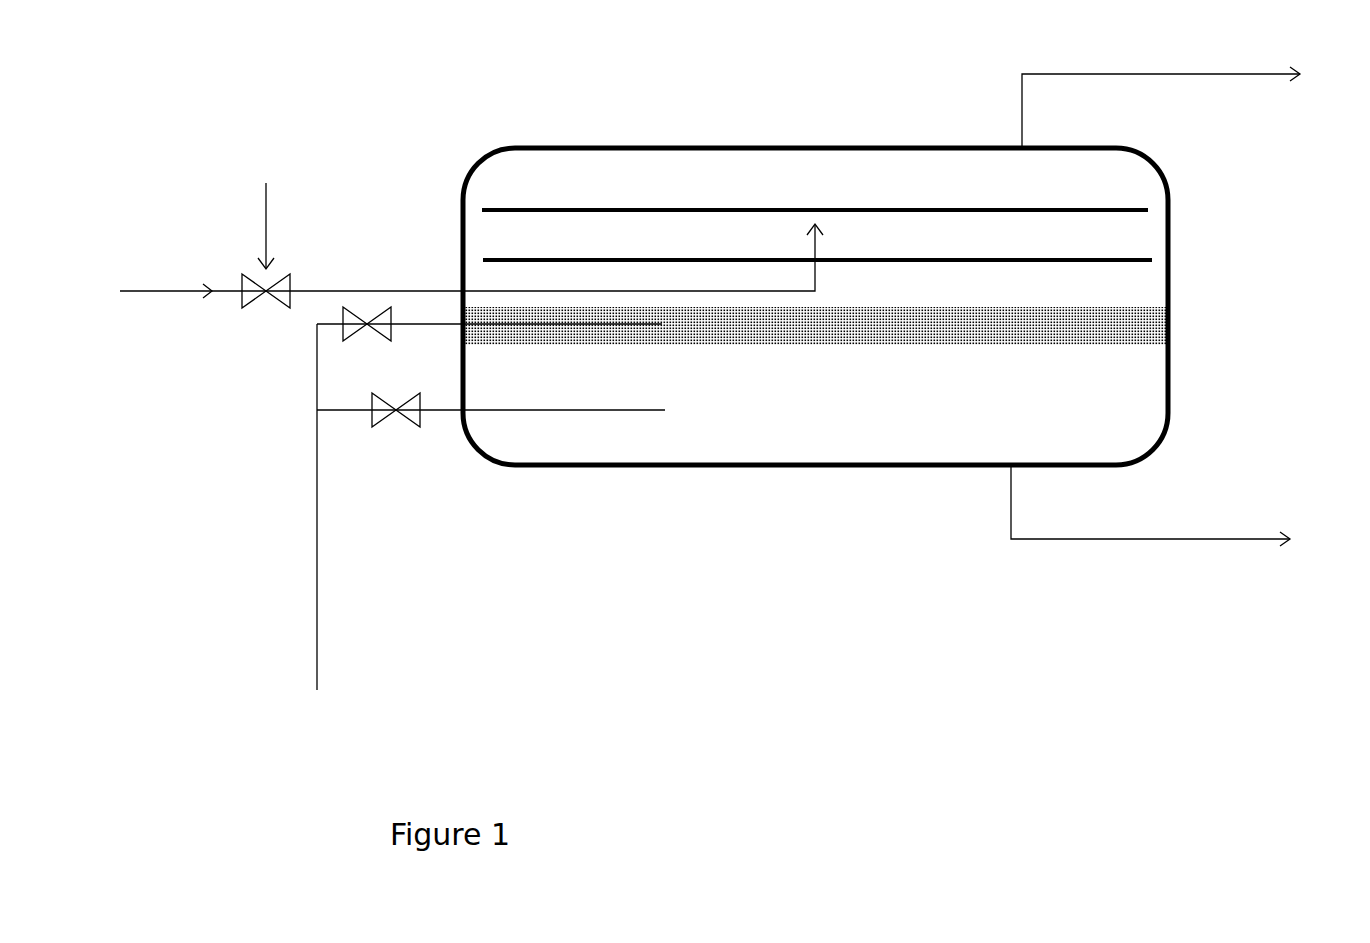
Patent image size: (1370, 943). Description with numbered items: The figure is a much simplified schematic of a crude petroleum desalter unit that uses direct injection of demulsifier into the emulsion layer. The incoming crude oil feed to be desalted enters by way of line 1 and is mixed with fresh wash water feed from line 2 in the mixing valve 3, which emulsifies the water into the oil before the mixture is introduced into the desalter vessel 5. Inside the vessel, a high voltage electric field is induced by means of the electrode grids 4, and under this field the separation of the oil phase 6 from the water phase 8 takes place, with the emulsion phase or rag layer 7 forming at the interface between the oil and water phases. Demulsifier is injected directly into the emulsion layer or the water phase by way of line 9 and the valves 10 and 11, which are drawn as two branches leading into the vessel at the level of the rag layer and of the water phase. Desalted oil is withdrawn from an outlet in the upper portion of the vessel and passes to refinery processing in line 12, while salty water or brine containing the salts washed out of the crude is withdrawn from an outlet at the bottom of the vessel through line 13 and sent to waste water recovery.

The line 1 is at (471, 261).
The line 2 is at (266, 208).
The mixing valve 3 is at (283, 283).
The electrode grids 4 is at (1095, 207).
The desalter vessel 5 is at (510, 148).
The oil phase 6 is at (712, 168).
The emulsion phase (rag layer) 7 is at (1165, 318).
The water phase 8 is at (805, 452).
The line 9 is at (320, 640).
The valve 10 is at (395, 425).
The valve 11 is at (380, 350).
The line 12 is at (1161, 82).
The line 13 is at (1154, 530).